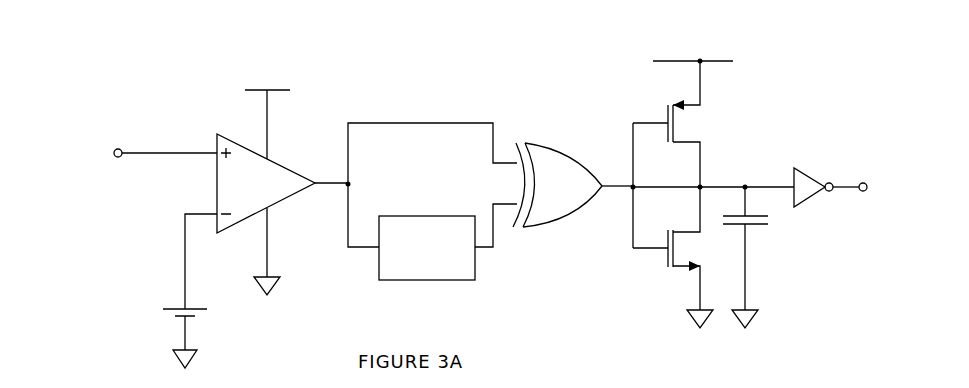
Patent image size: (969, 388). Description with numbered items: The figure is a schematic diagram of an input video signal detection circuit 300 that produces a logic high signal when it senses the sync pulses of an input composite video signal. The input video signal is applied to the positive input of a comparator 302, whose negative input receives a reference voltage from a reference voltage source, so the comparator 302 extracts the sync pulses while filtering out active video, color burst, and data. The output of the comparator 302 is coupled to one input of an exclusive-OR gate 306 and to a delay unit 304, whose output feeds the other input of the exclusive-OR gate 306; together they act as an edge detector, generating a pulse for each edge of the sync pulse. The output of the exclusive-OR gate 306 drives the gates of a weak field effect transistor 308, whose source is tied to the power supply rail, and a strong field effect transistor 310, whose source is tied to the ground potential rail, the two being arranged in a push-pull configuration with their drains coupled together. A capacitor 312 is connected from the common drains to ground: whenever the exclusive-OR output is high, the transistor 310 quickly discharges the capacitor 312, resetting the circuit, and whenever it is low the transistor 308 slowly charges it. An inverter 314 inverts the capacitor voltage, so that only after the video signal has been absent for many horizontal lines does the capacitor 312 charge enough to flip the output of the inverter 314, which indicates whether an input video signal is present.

The input video signal detection circuit 300 is at (476, 60).
The comparator 302 is at (272, 160).
The delay unit 304 is at (430, 216).
The exclusive-OR gate 306 is at (555, 148).
The field effect transistor 308 is at (692, 123).
The field effect transistor 310 is at (660, 262).
The capacitor 312 is at (758, 230).
The inverter 314 is at (800, 170).